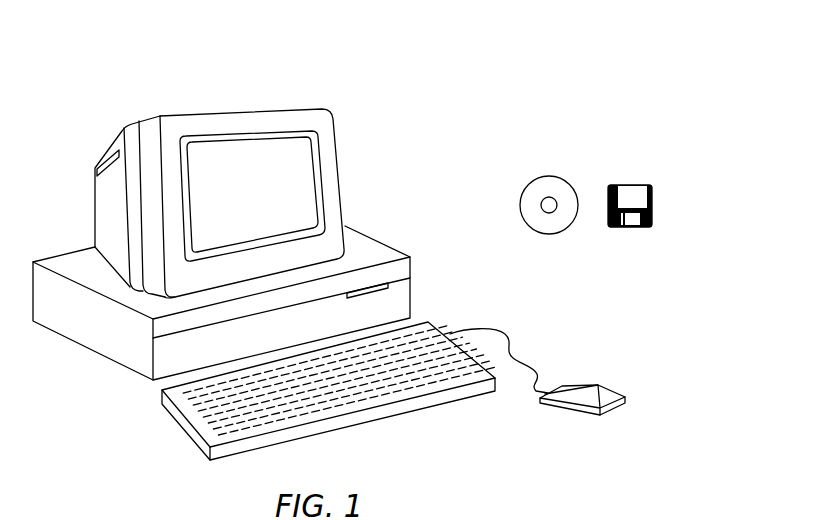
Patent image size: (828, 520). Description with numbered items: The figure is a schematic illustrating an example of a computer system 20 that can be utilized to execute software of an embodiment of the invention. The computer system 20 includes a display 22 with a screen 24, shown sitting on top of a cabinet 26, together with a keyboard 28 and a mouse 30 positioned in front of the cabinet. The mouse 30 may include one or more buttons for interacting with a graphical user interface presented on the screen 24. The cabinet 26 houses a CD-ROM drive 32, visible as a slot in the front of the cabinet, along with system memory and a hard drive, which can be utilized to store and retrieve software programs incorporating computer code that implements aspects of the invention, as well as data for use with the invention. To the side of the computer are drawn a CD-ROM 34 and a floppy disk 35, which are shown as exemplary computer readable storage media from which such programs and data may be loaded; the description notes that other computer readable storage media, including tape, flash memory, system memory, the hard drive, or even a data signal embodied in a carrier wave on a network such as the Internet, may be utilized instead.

The computer system 20 is at (493, 123).
The display 22 is at (342, 205).
The screen 24 is at (313, 163).
The cabinet 26 is at (113, 362).
The keyboard 28 is at (378, 421).
The mouse 30 is at (607, 388).
The CD-ROM drive 32 is at (410, 267).
The CD-ROM 34 is at (566, 167).
The floppy disk 35 is at (638, 177).